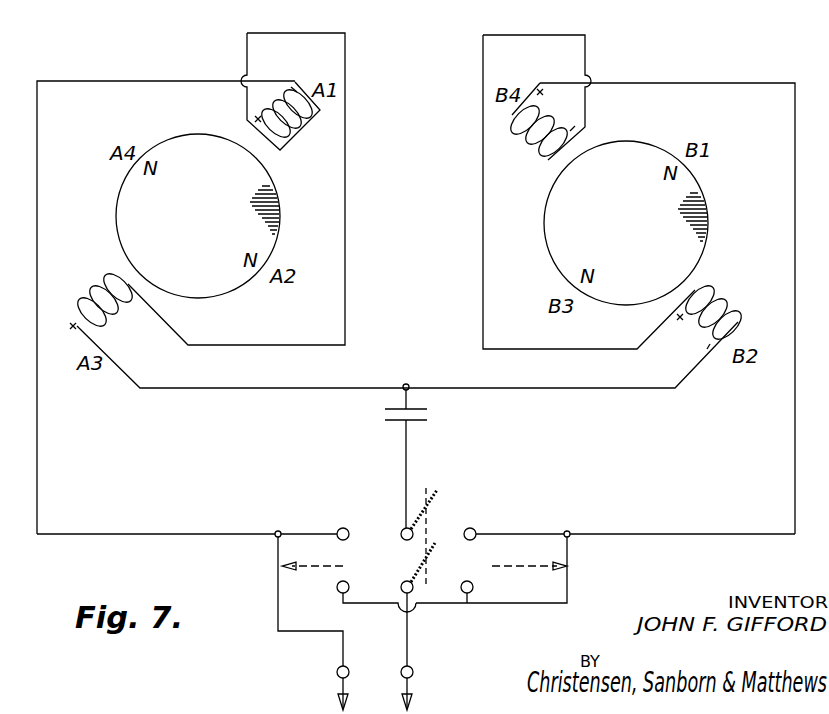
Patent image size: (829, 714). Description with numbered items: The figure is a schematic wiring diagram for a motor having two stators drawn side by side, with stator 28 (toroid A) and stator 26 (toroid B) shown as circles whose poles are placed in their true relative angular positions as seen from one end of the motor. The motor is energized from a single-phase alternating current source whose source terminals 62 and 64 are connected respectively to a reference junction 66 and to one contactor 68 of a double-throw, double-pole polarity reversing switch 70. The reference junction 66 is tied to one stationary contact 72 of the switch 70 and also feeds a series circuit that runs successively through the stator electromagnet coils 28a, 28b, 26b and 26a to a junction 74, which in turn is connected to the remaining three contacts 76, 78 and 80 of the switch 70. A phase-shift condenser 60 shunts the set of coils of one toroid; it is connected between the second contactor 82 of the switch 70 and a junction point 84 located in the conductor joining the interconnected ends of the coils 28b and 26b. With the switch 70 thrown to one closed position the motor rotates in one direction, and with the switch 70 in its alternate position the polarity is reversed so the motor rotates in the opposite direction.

The stator 26 is at (641, 262).
The stator 28 is at (208, 254).
The stator electromagnet coil 26a is at (527, 147).
The stator electromagnet coil 26b is at (722, 302).
The stator electromagnet coil 28a is at (308, 143).
The stator electromagnet coil 28b is at (130, 312).
The phase-shift condenser 60 is at (385, 414).
The source terminal 62 is at (336, 672).
The source terminal 64 is at (414, 668).
The reference junction 66 is at (278, 531).
The contactor 68 is at (420, 560).
The polarity reversing switch 70 is at (387, 520).
The stationary contact 72 is at (343, 528).
The junction 74 is at (570, 531).
The contact 76 is at (478, 531).
The contact 78 is at (474, 588).
The contact 80 is at (337, 590).
The second contactor 82 is at (439, 494).
The junction point 84 is at (408, 384).